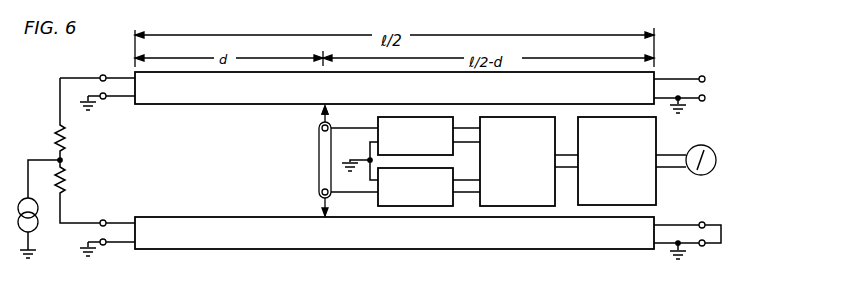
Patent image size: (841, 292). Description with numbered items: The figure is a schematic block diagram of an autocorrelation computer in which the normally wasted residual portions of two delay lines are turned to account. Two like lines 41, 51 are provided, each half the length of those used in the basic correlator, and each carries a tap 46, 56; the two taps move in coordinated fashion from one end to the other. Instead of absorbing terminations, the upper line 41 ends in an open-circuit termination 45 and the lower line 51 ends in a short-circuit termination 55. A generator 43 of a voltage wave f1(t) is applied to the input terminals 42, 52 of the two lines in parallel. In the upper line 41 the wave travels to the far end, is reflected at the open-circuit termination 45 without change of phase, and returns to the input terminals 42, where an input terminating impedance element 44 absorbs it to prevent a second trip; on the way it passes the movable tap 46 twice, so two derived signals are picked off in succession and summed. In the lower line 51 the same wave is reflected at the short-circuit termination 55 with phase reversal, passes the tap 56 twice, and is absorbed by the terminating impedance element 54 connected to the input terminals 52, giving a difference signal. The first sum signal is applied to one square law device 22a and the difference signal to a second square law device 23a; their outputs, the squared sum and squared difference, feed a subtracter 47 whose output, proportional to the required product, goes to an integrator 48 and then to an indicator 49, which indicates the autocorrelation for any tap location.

The upper delay line 41 is at (205, 105).
The input terminals 42 is at (106, 92).
The generator 43 is at (18, 235).
The input terminating impedance element 44 is at (68, 135).
The open-circuit termination 45 is at (708, 88).
The movable tap 46 is at (320, 124).
The subtracter 47 is at (517, 206).
The integrator 48 is at (602, 205).
The indicator 49 is at (713, 171).
The lower delay line 51 is at (186, 217).
The input terminals 52 is at (107, 238).
The terminating impedance element 54 is at (68, 175).
The short-circuit termination 55 is at (721, 234).
The movable tap 56 is at (318, 200).
The square law device 22a is at (437, 117).
The square law device 23a is at (413, 206).